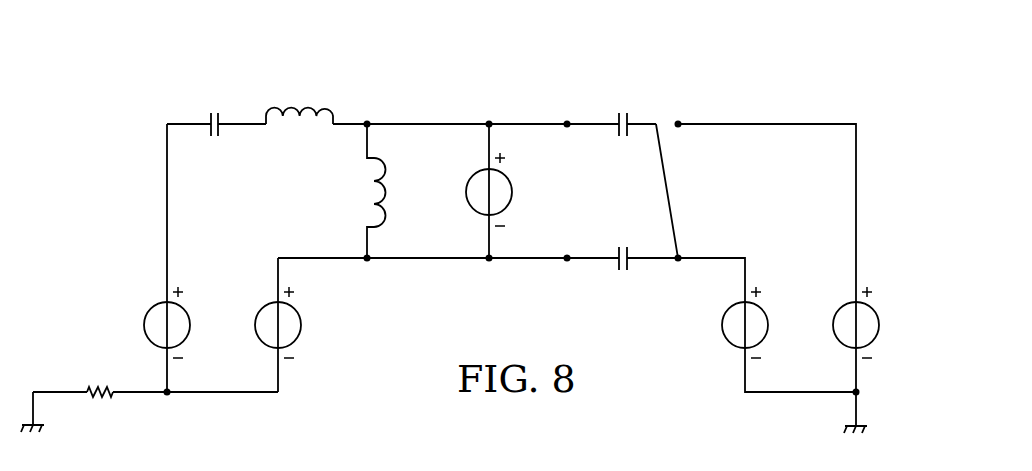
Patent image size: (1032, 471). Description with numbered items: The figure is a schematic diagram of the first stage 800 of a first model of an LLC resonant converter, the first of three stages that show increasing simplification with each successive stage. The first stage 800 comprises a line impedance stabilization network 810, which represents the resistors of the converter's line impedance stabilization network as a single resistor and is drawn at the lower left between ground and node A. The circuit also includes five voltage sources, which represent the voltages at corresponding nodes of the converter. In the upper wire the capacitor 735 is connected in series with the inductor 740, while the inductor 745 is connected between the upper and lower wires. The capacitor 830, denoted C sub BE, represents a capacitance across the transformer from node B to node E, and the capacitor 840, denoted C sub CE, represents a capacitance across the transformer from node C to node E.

The capacitor 735 is at (217, 110).
The inductor 740 is at (292, 106).
The inductor 745 is at (388, 183).
The first stage 800 is at (787, 71).
The LISN 810 is at (97, 400).
The capacitor 830 is at (622, 112).
The capacitor 840 is at (624, 272).